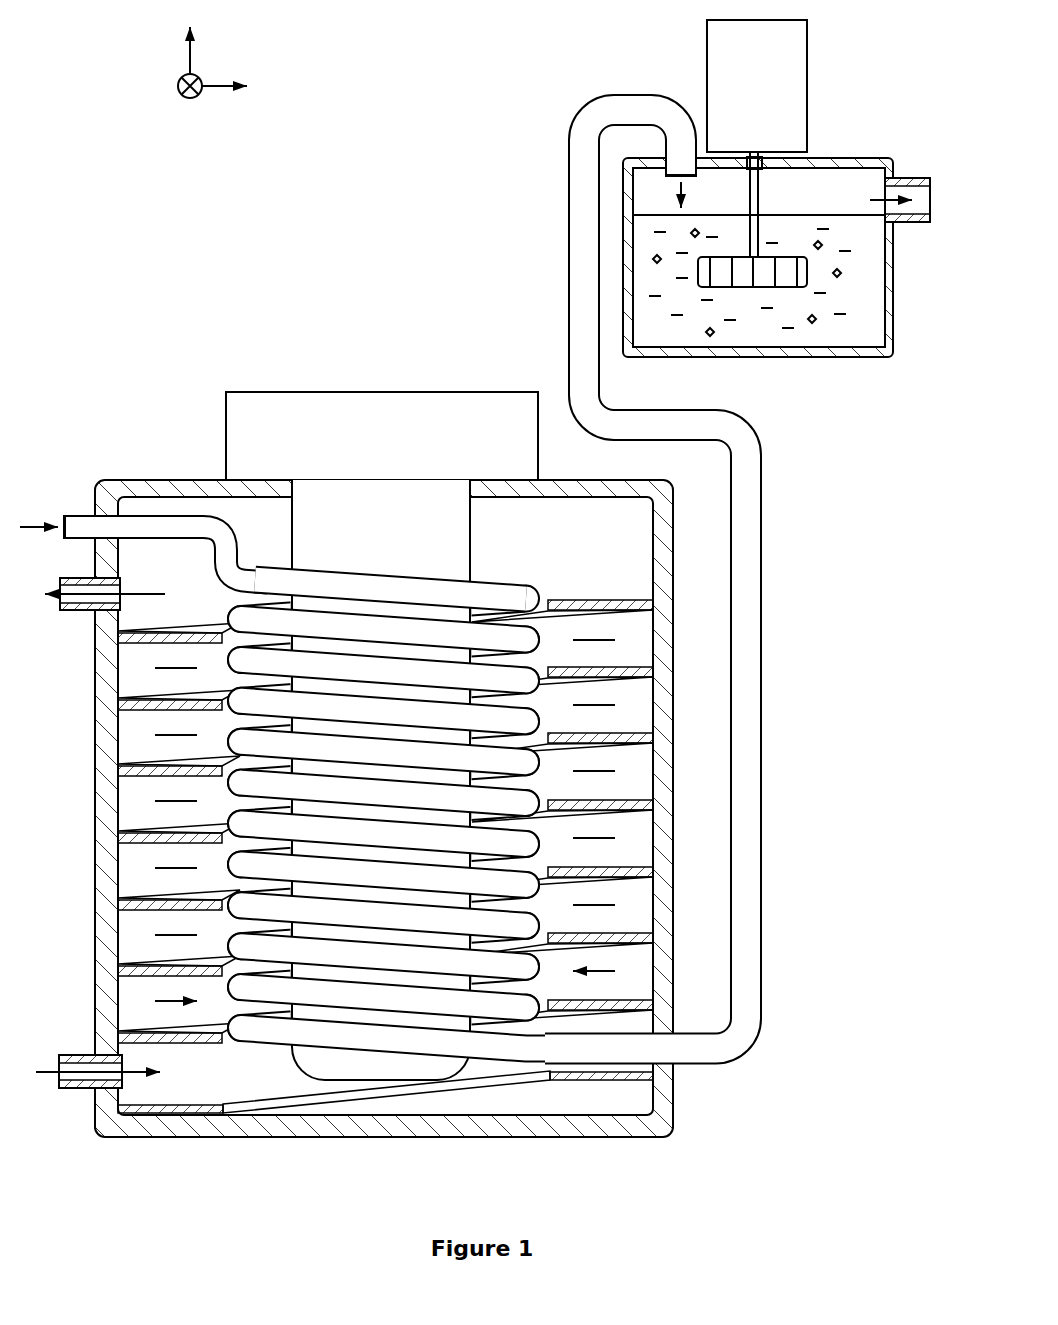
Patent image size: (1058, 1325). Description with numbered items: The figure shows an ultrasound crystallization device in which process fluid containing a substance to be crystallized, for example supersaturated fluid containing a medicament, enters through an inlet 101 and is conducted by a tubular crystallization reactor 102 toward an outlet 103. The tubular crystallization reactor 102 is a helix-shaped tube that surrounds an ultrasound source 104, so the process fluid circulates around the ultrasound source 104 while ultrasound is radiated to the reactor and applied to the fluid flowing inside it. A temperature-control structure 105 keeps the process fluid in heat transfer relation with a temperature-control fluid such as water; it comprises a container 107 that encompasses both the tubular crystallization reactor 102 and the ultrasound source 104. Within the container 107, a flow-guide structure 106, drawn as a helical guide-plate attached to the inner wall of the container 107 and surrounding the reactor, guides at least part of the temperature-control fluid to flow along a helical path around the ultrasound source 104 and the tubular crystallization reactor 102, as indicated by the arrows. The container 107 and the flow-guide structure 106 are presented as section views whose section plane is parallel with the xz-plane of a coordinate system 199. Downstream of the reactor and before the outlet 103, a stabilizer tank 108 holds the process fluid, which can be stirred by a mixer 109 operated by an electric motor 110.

The inlet 101 is at (73, 515).
The tubular crystallization reactor 102 is at (504, 580).
The outlet 103 is at (900, 177).
The ultrasound source 104 is at (371, 556).
The temperature-control structure 105 is at (145, 571).
The flow-guide structure 106 is at (563, 600).
The container 107 is at (674, 682).
The stabilizer tank 108 is at (845, 158).
The mixer 109 is at (785, 256).
The electric motor 110 is at (738, 121).
The coordinate system 199 is at (209, 65).